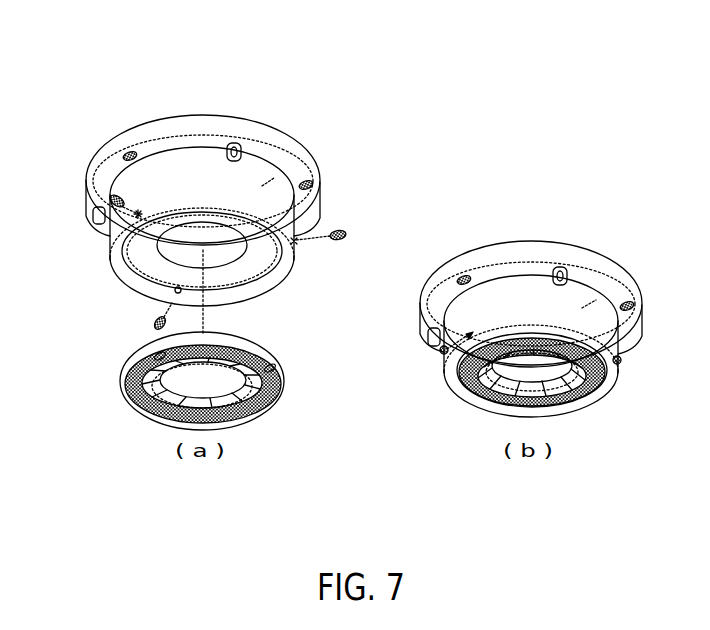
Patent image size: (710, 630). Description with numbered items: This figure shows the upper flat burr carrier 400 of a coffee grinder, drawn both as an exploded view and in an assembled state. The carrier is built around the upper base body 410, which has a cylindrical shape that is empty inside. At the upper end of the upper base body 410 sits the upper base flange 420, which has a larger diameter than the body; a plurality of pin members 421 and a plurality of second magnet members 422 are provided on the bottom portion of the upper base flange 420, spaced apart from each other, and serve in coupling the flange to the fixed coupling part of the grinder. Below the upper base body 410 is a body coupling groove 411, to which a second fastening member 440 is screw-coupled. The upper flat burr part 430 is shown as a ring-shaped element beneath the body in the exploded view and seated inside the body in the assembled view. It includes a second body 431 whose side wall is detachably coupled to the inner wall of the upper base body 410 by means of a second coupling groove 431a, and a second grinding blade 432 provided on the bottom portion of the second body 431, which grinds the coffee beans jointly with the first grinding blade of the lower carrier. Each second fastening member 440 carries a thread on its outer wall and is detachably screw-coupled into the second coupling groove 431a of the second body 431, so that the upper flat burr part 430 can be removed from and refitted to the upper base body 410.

The upper flat burr carrier 400 is at (98, 116).
The upper base body 410 is at (268, 182).
The body coupling groove 411 is at (104, 230).
The upper base flange 420 is at (194, 118).
The pin member 421 is at (236, 143).
The second magnet member 422 is at (128, 151).
The upper flat burr part 430 is at (335, 382).
The second body 431 is at (240, 342).
The second coupling groove 431a is at (148, 350).
The second grinding blade 432 is at (260, 417).
The second fastening member 440 is at (112, 197).